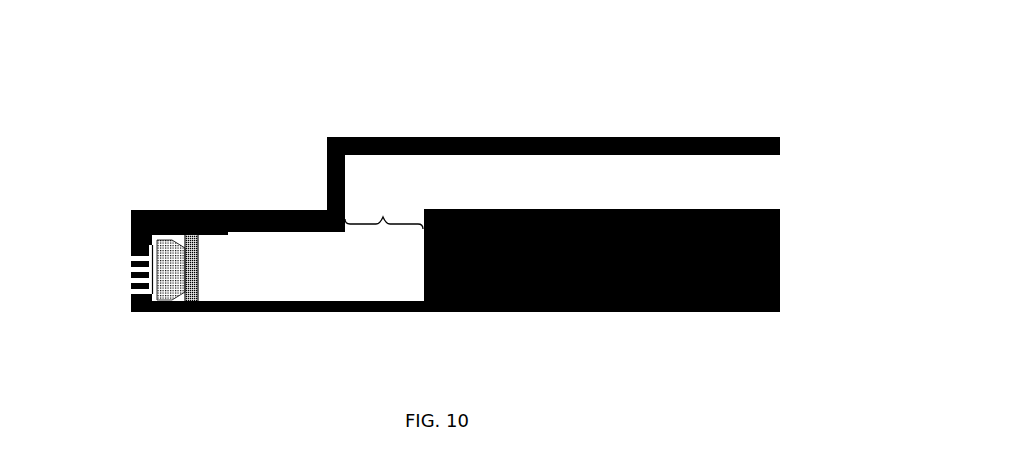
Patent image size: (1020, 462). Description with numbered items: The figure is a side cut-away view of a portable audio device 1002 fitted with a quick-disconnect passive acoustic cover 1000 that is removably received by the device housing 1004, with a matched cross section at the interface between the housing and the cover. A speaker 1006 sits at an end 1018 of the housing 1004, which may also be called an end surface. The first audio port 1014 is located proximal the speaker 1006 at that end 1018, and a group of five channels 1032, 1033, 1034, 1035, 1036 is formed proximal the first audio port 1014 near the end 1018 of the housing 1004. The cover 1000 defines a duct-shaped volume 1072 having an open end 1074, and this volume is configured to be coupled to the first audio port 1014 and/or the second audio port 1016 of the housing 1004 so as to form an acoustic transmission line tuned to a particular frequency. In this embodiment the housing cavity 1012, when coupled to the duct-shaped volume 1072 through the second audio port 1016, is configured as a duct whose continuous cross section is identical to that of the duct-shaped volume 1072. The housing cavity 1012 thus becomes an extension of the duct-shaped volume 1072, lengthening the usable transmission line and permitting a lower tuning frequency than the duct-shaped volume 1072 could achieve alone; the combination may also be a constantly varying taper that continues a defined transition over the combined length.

The quick-disconnect passive acoustic cover 1000 is at (672, 138).
The portable audio device 1002 is at (833, 74).
The housing 1004 is at (548, 313).
The speaker 1006 is at (195, 283).
The housing cavity 1012 is at (300, 268).
The first audio port 1014 is at (131, 296).
The second audio port 1016 is at (383, 217).
The end 1018 is at (131, 239).
The channel 1032 is at (131, 243).
The channel 1033 is at (131, 252).
The channel 1034 is at (130, 264).
The channel 1035 is at (130, 277).
The channel 1036 is at (130, 288).
The duct-shaped volume 1072 is at (572, 178).
The open end 1074 is at (770, 177).